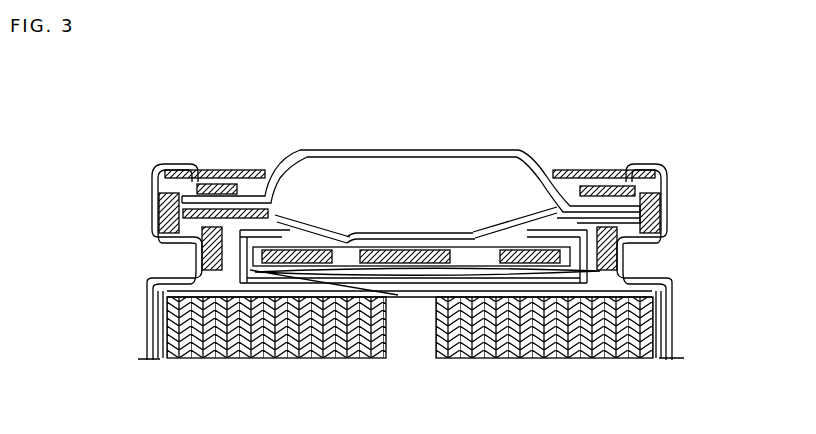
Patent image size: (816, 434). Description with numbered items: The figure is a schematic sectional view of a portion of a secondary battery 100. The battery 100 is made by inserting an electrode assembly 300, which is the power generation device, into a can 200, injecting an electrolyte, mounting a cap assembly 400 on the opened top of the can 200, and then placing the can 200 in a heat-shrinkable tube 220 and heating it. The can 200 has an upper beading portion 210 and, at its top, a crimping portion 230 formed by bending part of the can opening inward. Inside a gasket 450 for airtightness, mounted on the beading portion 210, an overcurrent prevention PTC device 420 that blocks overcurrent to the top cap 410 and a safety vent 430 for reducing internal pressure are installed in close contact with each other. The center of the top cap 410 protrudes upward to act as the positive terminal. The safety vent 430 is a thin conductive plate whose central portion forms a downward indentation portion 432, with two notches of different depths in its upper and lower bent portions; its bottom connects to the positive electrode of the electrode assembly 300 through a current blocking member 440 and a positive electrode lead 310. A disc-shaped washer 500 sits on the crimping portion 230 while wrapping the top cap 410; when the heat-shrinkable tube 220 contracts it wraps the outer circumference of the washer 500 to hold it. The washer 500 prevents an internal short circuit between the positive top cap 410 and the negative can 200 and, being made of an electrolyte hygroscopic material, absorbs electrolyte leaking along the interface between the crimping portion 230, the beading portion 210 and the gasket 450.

The battery 100 is at (97, 99).
The can 200 is at (673, 352).
The beading portion 210 is at (150, 322).
The heat-shrinkable tube 220 is at (150, 258).
The crimping portion 230 is at (660, 164).
The electrode assembly 300 is at (659, 376).
The positive electrode lead 310 is at (402, 297).
The cap assembly 400 is at (698, 147).
The top cap 410 is at (380, 158).
The PTC device 420 is at (579, 207).
The safety vent 430 is at (312, 220).
The indentation portion 432 is at (445, 228).
The current blocking member 440 is at (163, 321).
The gasket 450 is at (182, 204).
The washer 500 is at (222, 172).